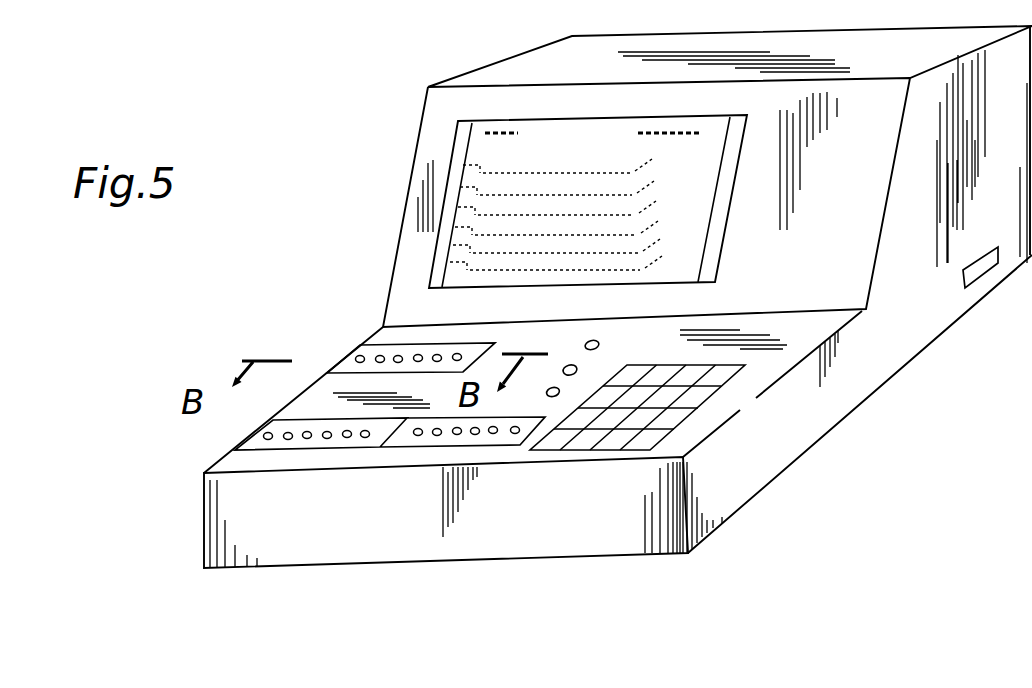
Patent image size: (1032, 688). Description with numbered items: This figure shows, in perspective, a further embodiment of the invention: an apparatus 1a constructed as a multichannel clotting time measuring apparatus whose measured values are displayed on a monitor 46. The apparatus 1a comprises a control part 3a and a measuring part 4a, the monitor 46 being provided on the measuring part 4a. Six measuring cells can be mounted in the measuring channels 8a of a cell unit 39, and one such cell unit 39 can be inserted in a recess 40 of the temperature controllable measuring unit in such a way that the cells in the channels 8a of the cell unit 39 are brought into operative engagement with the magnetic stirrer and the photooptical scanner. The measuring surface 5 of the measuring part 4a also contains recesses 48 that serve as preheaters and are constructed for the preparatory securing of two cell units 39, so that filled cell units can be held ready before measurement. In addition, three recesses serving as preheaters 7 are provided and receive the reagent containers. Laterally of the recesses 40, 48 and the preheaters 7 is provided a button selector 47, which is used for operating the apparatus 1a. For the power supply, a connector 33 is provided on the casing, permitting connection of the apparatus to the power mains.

The apparatus 1a is at (323, 86).
The measuring part 4a is at (428, 124).
The monitor 46 is at (705, 160).
The recess 40 is at (388, 338).
The cell unit 39 is at (359, 346).
The measuring channel 8a is at (357, 355).
The control part 3a is at (818, 332).
The connector 33 is at (975, 268).
The button selector 47 is at (694, 397).
The preheater 7 is at (597, 346).
The recess 48 is at (258, 452).
The measuring surface 5 is at (390, 469).